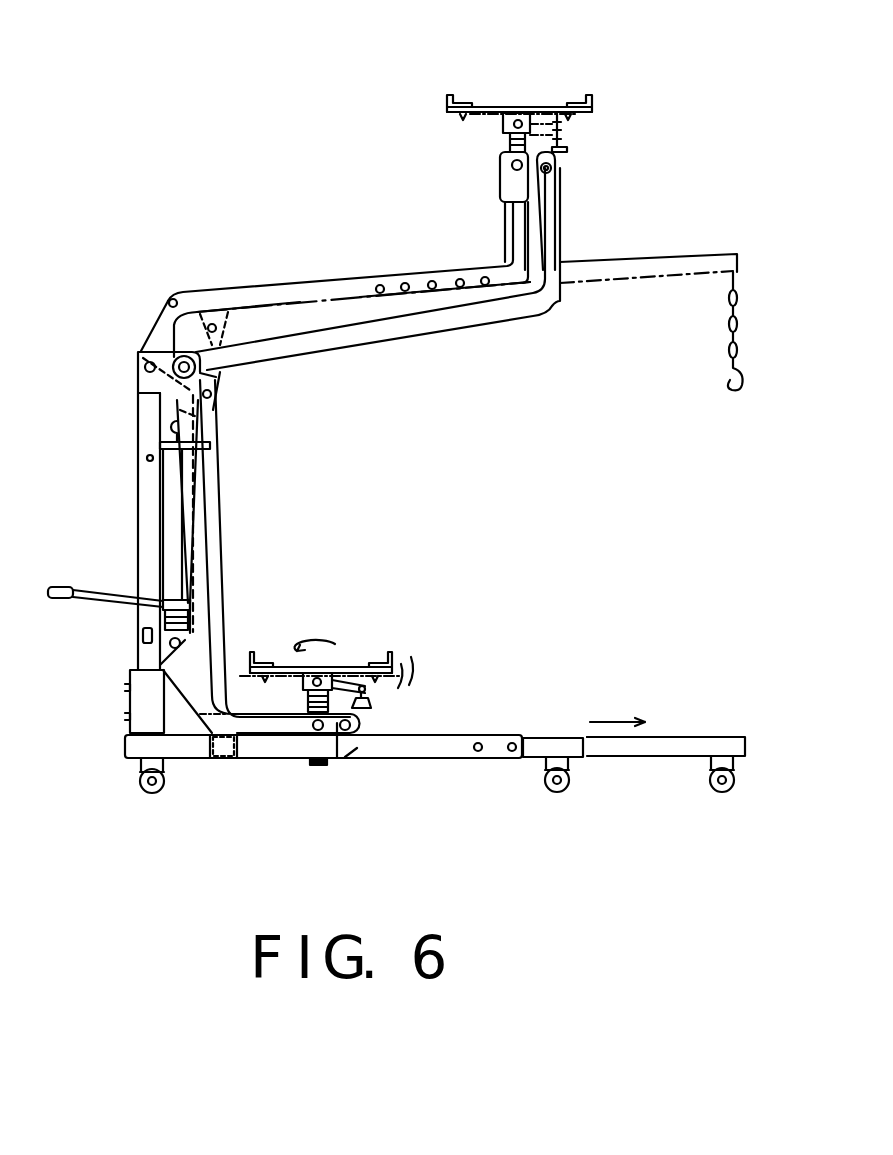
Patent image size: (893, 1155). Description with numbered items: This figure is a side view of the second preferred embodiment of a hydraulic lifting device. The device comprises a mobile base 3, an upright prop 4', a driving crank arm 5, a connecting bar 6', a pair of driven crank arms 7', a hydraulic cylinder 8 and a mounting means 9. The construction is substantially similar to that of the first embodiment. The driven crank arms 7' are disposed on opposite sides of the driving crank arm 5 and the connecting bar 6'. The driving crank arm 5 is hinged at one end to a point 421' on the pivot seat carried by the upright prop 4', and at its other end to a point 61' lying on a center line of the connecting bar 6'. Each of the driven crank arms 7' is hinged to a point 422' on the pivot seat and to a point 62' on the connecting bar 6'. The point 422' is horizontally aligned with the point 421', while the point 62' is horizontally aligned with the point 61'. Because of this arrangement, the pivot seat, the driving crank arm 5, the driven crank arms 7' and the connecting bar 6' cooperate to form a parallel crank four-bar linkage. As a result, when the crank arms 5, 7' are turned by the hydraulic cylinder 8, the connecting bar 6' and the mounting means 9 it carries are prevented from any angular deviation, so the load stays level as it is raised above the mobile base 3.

The mobile base 3 is at (457, 700).
The upright prop 4' is at (147, 542).
The driving crank arm 5 is at (412, 280).
The connecting bar 6' is at (419, 487).
The hinge point on connecting bar 61' is at (463, 152).
The hinge point on connecting bar 62' is at (596, 193).
The driven crank arm 7' is at (351, 400).
The hydraulic cylinder 8 is at (170, 487).
The mounting means 9 is at (542, 92).
The hinge point on pivot seat 421' is at (106, 356).
The hinge point on pivot seat 422' is at (132, 337).